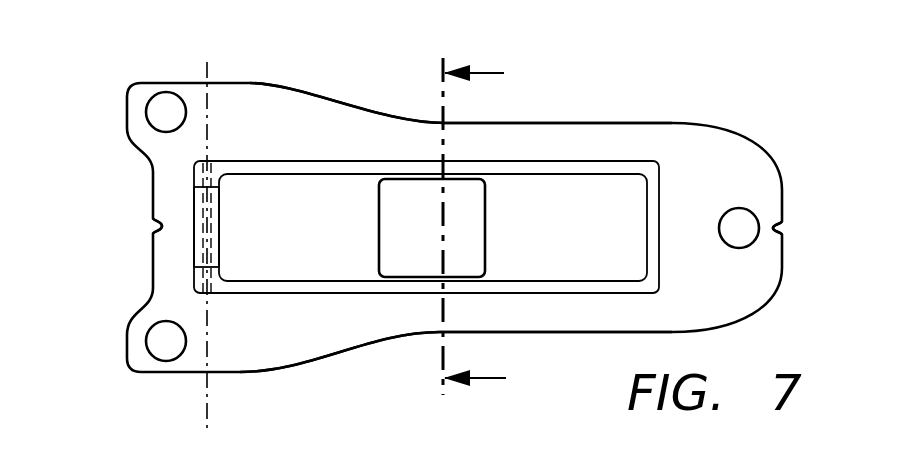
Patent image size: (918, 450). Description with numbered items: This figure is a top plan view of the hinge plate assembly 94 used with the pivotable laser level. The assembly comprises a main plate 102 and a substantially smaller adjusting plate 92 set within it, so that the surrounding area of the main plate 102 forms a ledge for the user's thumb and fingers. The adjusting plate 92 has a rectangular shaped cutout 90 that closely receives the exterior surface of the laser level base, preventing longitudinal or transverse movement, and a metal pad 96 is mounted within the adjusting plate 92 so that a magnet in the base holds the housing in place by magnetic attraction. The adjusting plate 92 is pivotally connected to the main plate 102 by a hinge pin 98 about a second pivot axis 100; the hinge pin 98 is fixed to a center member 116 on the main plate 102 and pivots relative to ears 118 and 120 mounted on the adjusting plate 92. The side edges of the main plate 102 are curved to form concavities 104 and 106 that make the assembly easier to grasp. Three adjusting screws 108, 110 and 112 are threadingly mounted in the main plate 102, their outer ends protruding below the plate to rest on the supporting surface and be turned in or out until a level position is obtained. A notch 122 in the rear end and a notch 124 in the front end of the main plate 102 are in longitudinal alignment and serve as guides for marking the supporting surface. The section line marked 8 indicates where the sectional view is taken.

The section line 8- 8 is at (474, 228).
The cutout 90 is at (590, 176).
The adjusting plate 92 is at (295, 158).
The hinge plate assembly 94 is at (733, 139).
The metal pad 96 is at (400, 205).
The hinge pin 98 is at (212, 226).
The second pivot axis 100 is at (207, 397).
The main plate 102 is at (318, 330).
The concavity 104 is at (543, 333).
The concavity 106 is at (548, 123).
The adjusting screw 108 is at (743, 217).
The adjusting screw 110 is at (158, 114).
The adjusting screw 112 is at (160, 341).
The center member 116 is at (196, 245).
The ear 118 is at (198, 175).
The ear 120 is at (196, 278).
The notch 122 is at (786, 226).
The notch 124 is at (156, 226).